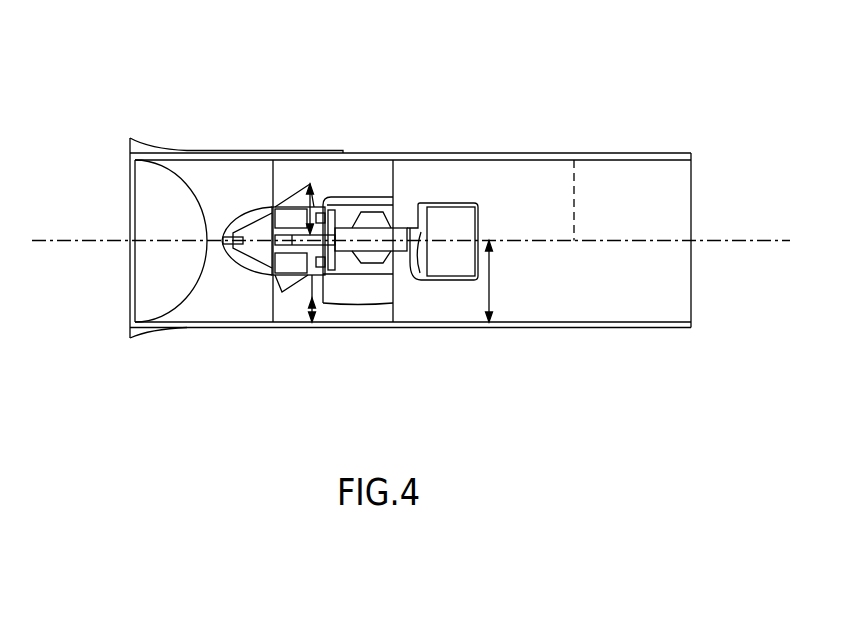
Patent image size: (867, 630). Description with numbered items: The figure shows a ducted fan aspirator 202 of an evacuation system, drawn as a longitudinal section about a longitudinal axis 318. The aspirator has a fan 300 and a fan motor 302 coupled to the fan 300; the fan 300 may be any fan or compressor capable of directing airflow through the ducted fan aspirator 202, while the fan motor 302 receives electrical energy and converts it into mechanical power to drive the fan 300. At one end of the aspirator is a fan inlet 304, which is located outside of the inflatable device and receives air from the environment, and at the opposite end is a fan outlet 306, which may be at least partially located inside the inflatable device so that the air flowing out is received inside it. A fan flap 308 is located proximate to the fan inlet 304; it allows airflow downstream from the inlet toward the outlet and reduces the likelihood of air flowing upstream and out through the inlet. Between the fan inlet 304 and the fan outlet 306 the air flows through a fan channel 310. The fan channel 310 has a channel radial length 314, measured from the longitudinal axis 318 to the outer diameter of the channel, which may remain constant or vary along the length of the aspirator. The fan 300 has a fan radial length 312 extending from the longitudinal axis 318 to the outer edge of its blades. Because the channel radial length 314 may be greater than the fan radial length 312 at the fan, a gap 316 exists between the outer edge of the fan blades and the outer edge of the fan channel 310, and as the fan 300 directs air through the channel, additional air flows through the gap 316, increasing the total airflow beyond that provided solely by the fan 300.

The ducted fan aspirator 202 is at (494, 74).
The fan 300 is at (306, 184).
The fan motor 302 is at (353, 303).
The fan inlet 304 is at (129, 165).
The fan outlet 306 is at (691, 226).
The fan flap 308 is at (143, 268).
The fan channel 310 is at (574, 160).
The fan radial length 312 is at (300, 209).
The channel radial length 314 is at (488, 290).
The gap 316 is at (309, 310).
The longitudinal axis 318 is at (734, 241).